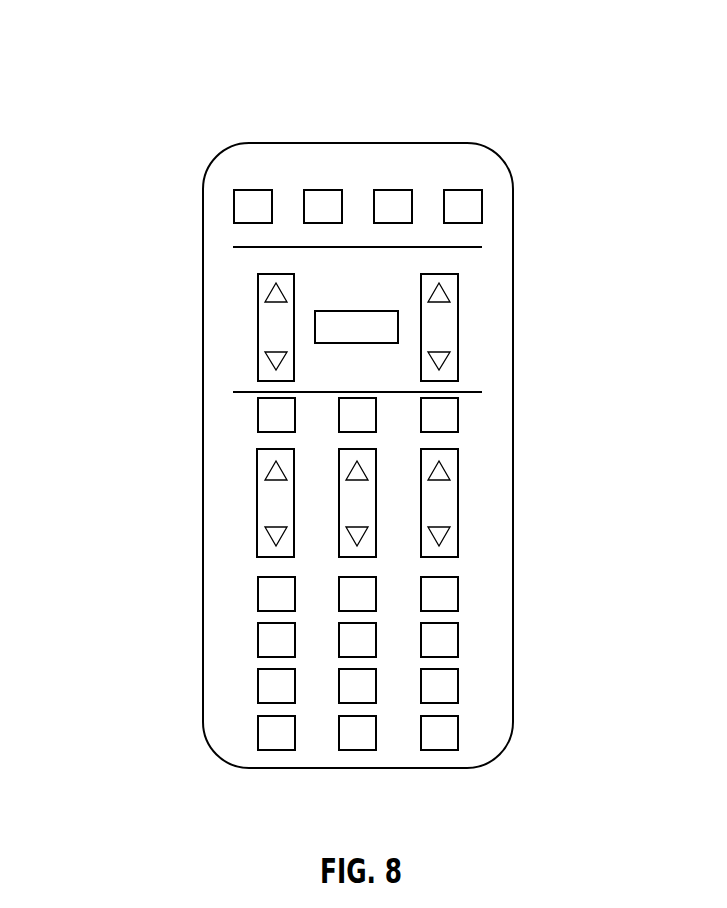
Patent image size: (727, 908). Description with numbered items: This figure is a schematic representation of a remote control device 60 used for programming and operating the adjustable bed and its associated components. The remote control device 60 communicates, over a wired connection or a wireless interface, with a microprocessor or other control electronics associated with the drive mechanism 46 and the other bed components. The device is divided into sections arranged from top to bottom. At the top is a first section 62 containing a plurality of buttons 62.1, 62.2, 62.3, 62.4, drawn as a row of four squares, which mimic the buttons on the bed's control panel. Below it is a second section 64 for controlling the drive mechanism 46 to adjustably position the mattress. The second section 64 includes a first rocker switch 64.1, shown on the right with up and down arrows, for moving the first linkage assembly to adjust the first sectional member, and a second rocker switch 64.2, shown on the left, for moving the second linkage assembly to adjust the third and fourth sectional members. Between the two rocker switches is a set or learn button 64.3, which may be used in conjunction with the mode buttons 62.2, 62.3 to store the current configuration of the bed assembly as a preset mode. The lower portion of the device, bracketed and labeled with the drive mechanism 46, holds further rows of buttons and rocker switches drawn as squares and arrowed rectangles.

The remote control device 60 is at (597, 67).
The first section 62 is at (245, 143).
The button 62.1 is at (462, 190).
The button 62.2 is at (392, 190).
The button 62.3 is at (323, 190).
The button 62.4 is at (252, 190).
The second section 64 is at (203, 274).
The first rocker switch 64.1 is at (458, 327).
The second rocker switch 64.2 is at (258, 358).
The set or learn button 64.3 is at (382, 311).
The drive mechanism 46 is at (203, 449).